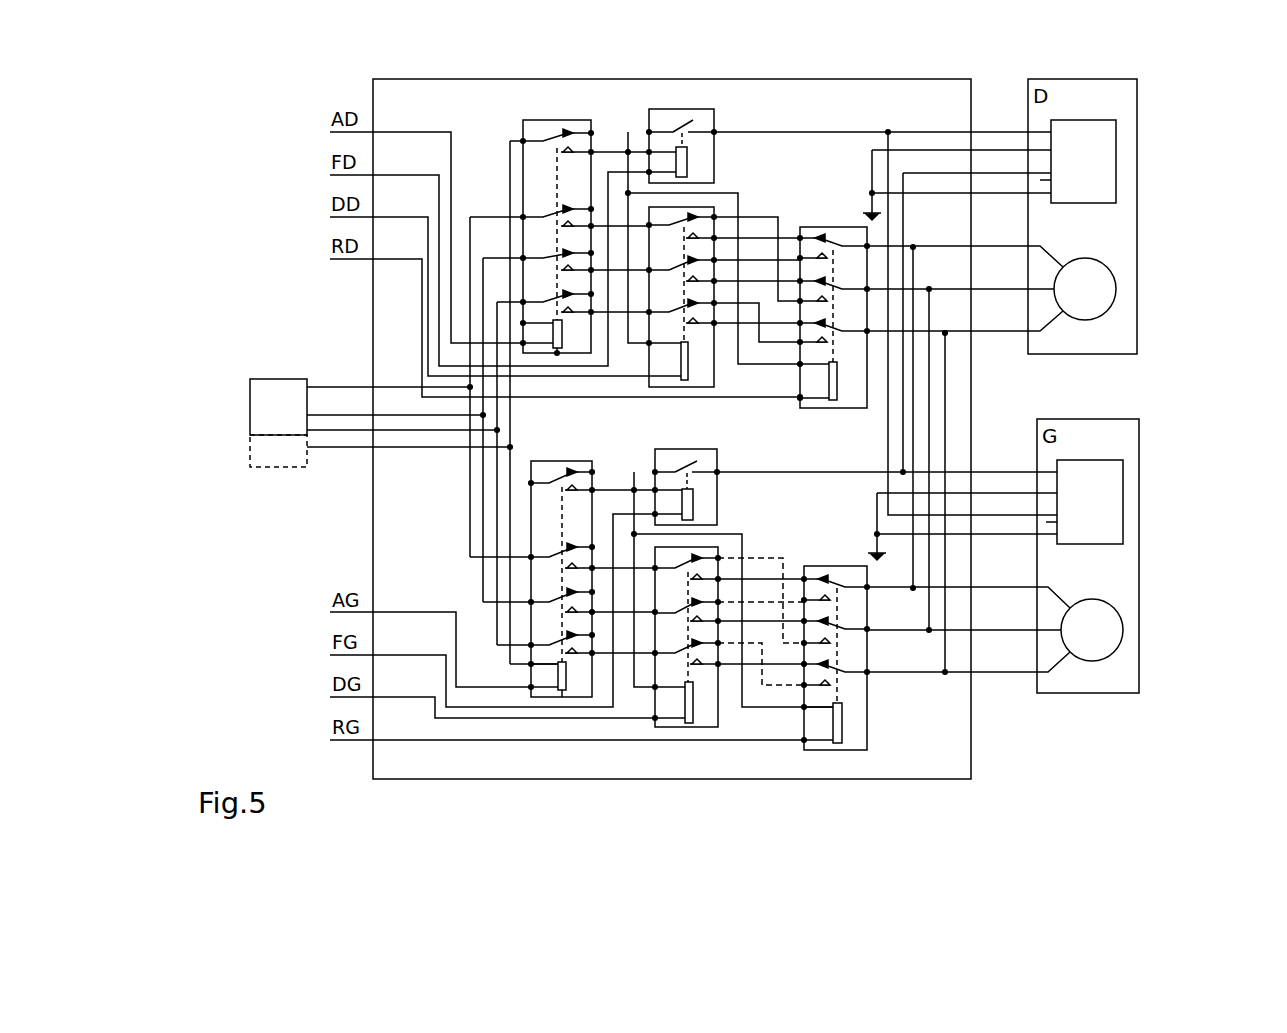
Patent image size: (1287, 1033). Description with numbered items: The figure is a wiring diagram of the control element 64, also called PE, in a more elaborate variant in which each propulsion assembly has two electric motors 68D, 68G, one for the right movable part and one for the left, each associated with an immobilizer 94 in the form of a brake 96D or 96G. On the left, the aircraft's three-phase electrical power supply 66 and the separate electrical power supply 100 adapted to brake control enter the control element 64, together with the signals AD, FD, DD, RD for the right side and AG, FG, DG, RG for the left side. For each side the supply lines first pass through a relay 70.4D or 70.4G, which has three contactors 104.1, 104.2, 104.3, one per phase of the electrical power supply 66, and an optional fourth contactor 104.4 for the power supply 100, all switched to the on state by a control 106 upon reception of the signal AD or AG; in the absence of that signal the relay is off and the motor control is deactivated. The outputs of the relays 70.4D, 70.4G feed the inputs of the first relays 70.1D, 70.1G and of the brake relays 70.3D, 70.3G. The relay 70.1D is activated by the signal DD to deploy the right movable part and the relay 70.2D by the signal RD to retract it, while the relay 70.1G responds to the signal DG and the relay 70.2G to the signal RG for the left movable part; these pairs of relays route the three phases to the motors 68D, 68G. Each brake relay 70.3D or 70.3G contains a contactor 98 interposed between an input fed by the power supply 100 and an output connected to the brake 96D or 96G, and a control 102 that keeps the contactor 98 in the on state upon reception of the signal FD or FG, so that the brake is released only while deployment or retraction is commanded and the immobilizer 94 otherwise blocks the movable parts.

The control element 64 is at (826, 79).
The electrical power supply 66 is at (374, 407).
The electrical power supply 100 is at (667, 66).
The relay 70.4D is at (567, 110).
The relay 70.3D is at (692, 98).
The relay 70.1D is at (714, 203).
The relay 70.2D is at (817, 227).
The relay 70.4G is at (584, 708).
The relay 70.3G is at (728, 456).
The relay 70.1G is at (705, 740).
The relay 70.2G is at (852, 762).
The contactor 104.1 is at (553, 138).
The contactor 104.2 is at (553, 205).
The contactor 104.3 is at (548, 250).
The fourth contactor 104.4 is at (548, 294).
The control 106 is at (566, 362).
The contactor 98 is at (694, 119).
The control 102 is at (698, 162).
The immobilizer 94 is at (1126, 132).
The brake 96D is at (1126, 180).
The brake 96G is at (1133, 522).
The electric motor 68D is at (1127, 281).
The electric motor 68G is at (1134, 621).